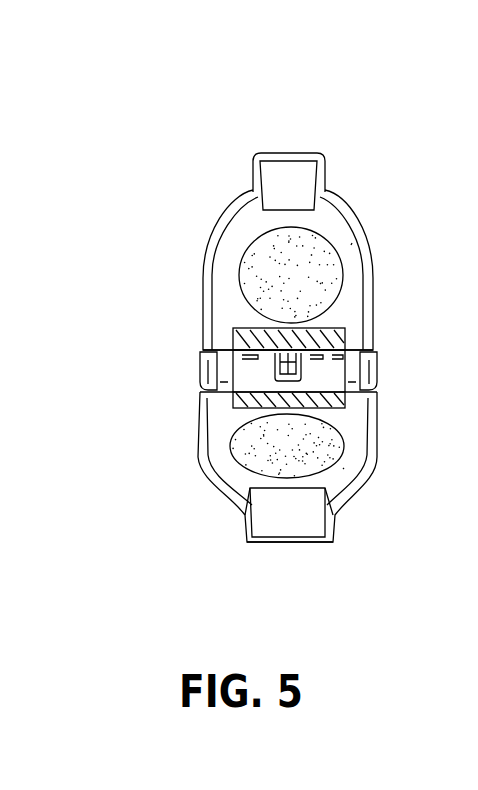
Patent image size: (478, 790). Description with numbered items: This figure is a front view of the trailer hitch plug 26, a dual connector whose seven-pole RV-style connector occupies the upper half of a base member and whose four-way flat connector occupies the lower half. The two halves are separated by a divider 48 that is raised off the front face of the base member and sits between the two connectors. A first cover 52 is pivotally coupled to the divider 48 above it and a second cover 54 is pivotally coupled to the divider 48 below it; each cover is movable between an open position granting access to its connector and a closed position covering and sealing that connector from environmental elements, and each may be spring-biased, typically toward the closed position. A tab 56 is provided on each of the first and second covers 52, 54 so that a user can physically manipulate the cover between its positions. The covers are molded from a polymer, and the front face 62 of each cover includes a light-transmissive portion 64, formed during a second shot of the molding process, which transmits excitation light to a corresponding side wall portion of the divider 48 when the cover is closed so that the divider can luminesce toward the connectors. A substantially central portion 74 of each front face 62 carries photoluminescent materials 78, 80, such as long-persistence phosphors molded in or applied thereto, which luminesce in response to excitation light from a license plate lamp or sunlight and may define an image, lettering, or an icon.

The trailer hitch plug 26 is at (318, 122).
The divider 48 is at (375, 370).
The first cover 52 is at (332, 188).
The second cover 54 is at (347, 503).
The tab 56 is at (285, 172).
The front face 62 is at (343, 245).
The light-transmissive portion 64 is at (247, 335).
The central portion 74 is at (322, 243).
The photoluminescent material 78 is at (320, 283).
The photoluminescent material 80 is at (318, 437).